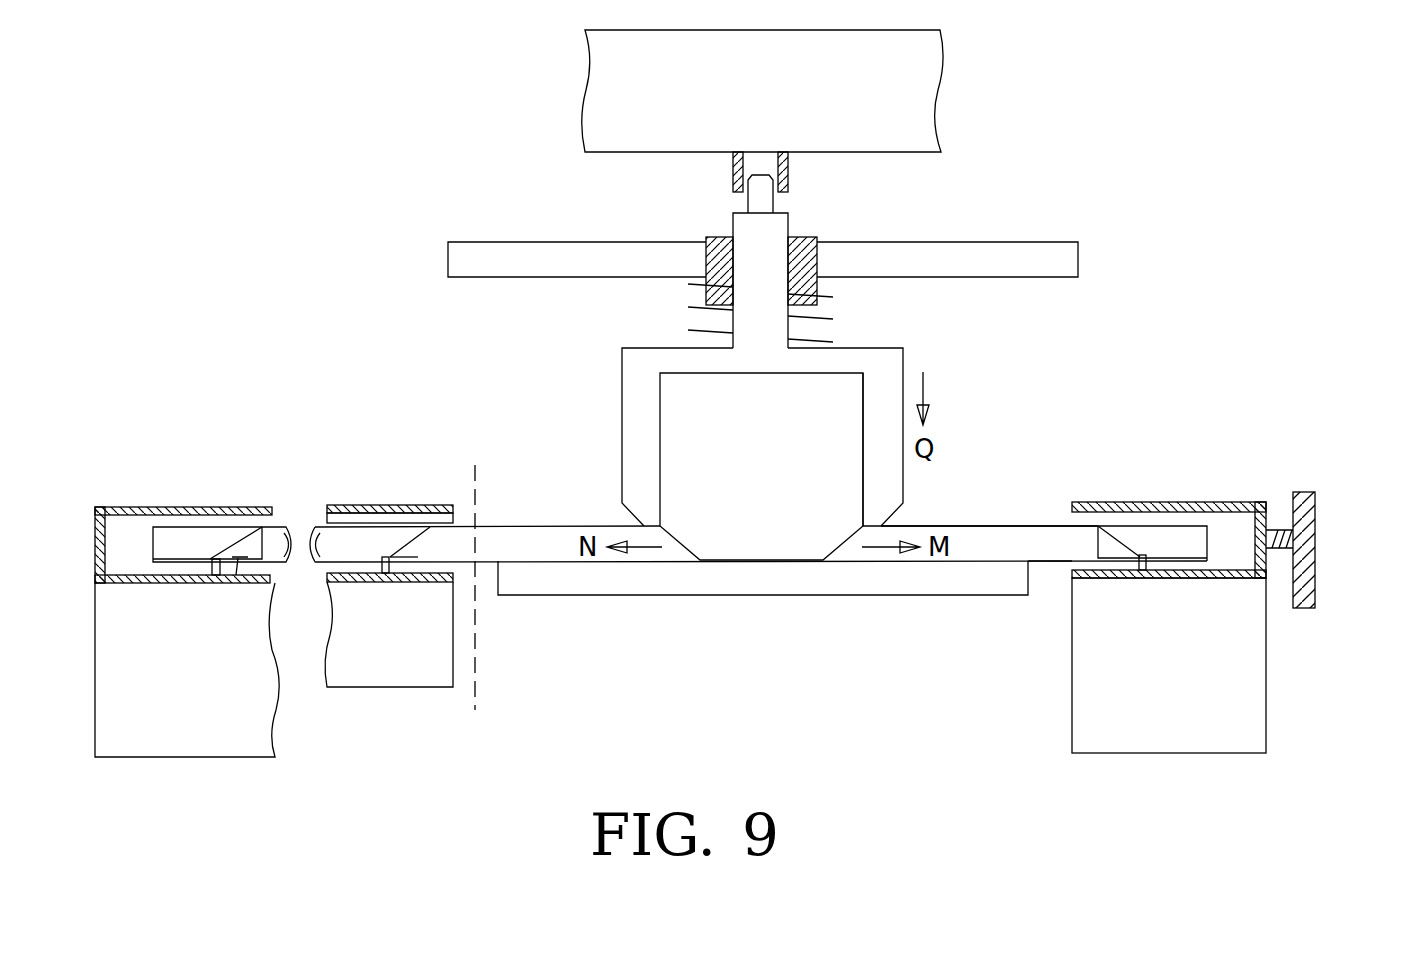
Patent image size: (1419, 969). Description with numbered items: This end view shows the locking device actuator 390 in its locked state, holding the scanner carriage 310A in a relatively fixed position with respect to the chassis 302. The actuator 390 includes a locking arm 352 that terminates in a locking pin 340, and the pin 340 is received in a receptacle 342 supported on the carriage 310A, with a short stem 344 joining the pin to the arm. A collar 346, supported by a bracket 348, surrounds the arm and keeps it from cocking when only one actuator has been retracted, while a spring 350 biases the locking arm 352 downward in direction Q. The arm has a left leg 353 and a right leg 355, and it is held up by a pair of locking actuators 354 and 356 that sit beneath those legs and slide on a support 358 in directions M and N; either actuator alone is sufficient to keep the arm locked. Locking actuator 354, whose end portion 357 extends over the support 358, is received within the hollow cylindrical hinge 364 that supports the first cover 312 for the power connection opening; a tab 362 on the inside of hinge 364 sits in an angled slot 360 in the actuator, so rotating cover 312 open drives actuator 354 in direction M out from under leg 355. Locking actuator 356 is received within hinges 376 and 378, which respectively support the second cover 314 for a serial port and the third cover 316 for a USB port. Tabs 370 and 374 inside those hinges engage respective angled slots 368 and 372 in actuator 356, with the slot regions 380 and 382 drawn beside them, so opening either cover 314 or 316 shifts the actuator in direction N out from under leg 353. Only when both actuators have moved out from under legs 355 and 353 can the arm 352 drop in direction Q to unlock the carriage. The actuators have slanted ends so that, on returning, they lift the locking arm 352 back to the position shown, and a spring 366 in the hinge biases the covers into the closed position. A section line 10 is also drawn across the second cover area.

The frame member 310A is at (935, 95).
The receptacle 342 is at (738, 184).
The locking pin 340 is at (768, 205).
The shaft 344 is at (740, 220).
The bracket 348 is at (497, 245).
The collar 346 is at (800, 238).
The spring 350 is at (825, 318).
The locking arm 352 is at (612, 391).
The left leg 353 is at (655, 448).
The leg 355 is at (878, 440).
The locking actuator 356 is at (284, 526).
The locking actuator 354 is at (967, 527).
The angled slot 372 is at (209, 543).
The tab 374 is at (212, 567).
The stop 382 is at (238, 582).
The hinge 378 is at (128, 507).
The third cover 316 is at (105, 687).
The hinge 376 is at (388, 505).
The second cover 314 is at (372, 687).
The angled slot 368 is at (390, 552).
The slot 380 is at (420, 556).
The tab 370 is at (383, 569).
The section line 10 is at (455, 459).
The support 358 is at (822, 582).
The band end 357 is at (1055, 564).
The angled slot 360 is at (1115, 540).
The tab 362 is at (1140, 566).
The hinge 364 is at (1165, 502).
The first cover 312 is at (1080, 690).
The spring 366 is at (1278, 530).
The chassis 302 is at (1310, 584).
The locking device actuator 390 is at (257, 189).